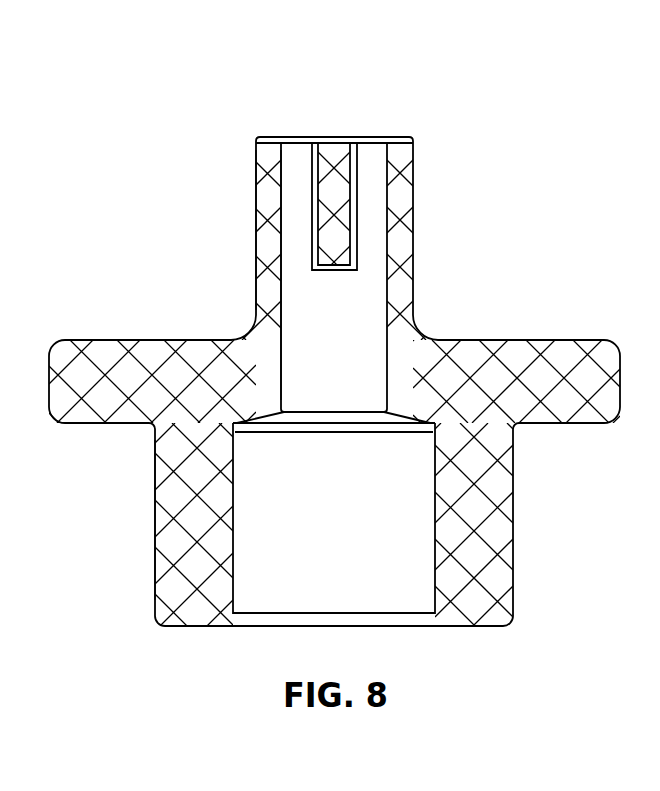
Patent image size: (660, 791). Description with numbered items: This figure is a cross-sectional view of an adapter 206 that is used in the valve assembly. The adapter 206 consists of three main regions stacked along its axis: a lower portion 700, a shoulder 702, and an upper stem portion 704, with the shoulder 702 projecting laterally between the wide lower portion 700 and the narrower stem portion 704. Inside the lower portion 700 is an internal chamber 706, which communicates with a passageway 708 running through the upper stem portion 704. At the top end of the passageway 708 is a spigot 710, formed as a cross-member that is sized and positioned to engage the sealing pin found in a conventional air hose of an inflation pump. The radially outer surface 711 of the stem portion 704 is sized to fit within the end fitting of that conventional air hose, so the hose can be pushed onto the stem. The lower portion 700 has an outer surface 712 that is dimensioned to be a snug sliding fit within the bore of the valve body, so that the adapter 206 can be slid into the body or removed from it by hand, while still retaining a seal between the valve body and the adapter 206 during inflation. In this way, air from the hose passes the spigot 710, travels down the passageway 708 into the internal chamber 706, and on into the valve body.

The adapter 206 is at (405, 127).
The lower portion 700 is at (495, 563).
The shoulder 702 is at (543, 338).
The upper stem portion 704 is at (404, 254).
The internal chamber 706 is at (277, 597).
The passageway 708 is at (298, 163).
The spigot 710 is at (328, 142).
The radially outer surface 711 is at (257, 297).
The outer surface 712 is at (155, 517).